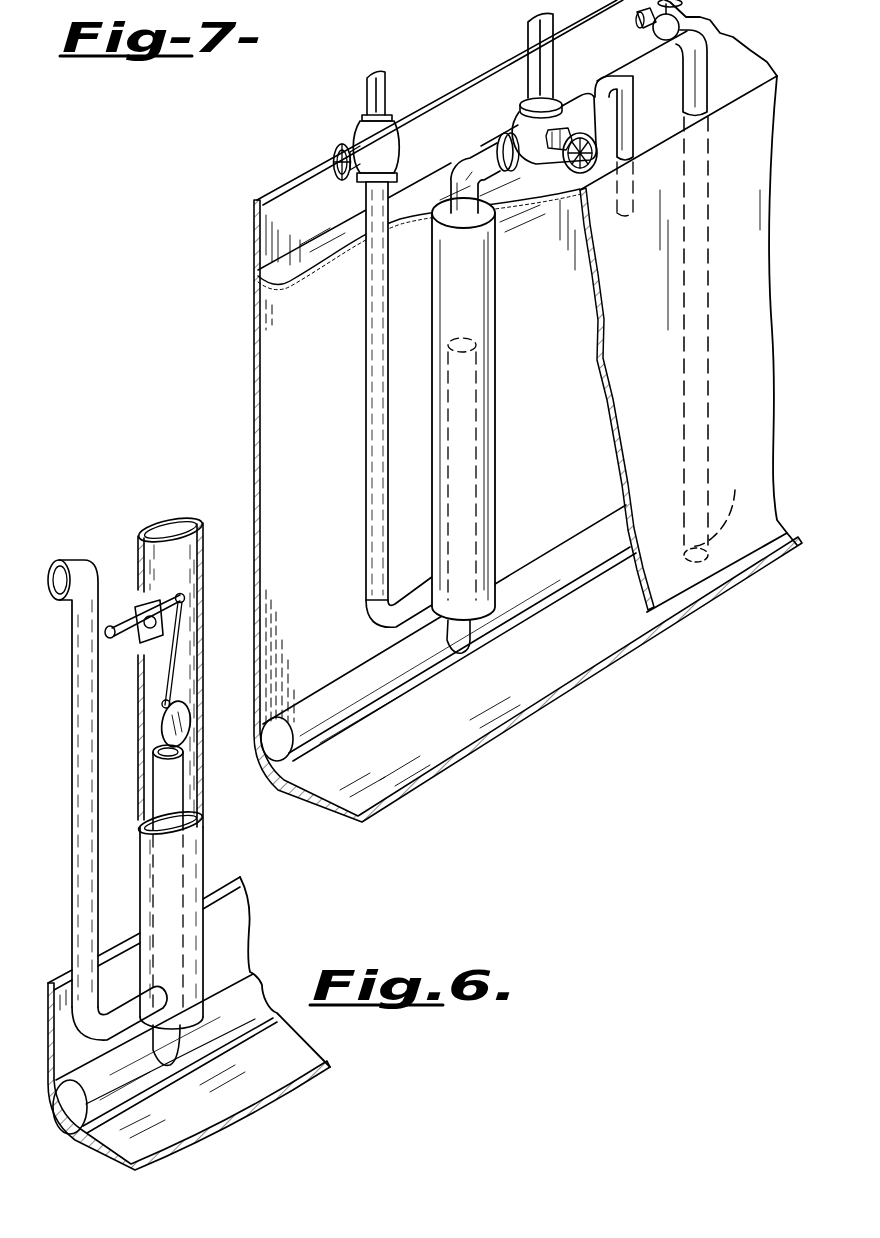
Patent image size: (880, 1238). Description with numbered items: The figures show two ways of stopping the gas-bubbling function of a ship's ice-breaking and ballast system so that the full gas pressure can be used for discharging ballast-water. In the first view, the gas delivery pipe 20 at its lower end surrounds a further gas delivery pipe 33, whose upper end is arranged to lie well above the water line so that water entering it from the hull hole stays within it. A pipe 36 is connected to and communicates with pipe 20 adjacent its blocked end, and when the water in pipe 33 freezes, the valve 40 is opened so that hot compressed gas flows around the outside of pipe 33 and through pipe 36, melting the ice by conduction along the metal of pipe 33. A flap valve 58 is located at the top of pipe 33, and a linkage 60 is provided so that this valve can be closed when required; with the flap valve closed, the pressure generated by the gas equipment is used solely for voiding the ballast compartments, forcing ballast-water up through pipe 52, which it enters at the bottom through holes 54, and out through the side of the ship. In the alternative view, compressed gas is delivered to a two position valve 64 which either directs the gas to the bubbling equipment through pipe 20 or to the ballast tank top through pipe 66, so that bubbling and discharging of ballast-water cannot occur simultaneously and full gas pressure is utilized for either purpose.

In FIG. 7, the gas delivery pipe 20 is at (482, 302).
In FIG. 6, the further gas delivery pipe 33 is at (175, 782).
In FIG. 7, the pipe 36 is at (368, 318).
In FIG. 6, the pipe 36 is at (78, 815).
In FIG. 7, the valve 40 is at (380, 143).
In FIG. 7, the pipe 52 is at (690, 330).
In FIG. 7, the holes 54 is at (735, 490).
In FIG. 6, the flap valve 58 is at (190, 720).
In FIG. 6, the linkage 60 is at (177, 657).
In FIG. 7, the two position valve 64 is at (563, 100).
In FIG. 7, the pipe 66 is at (633, 98).